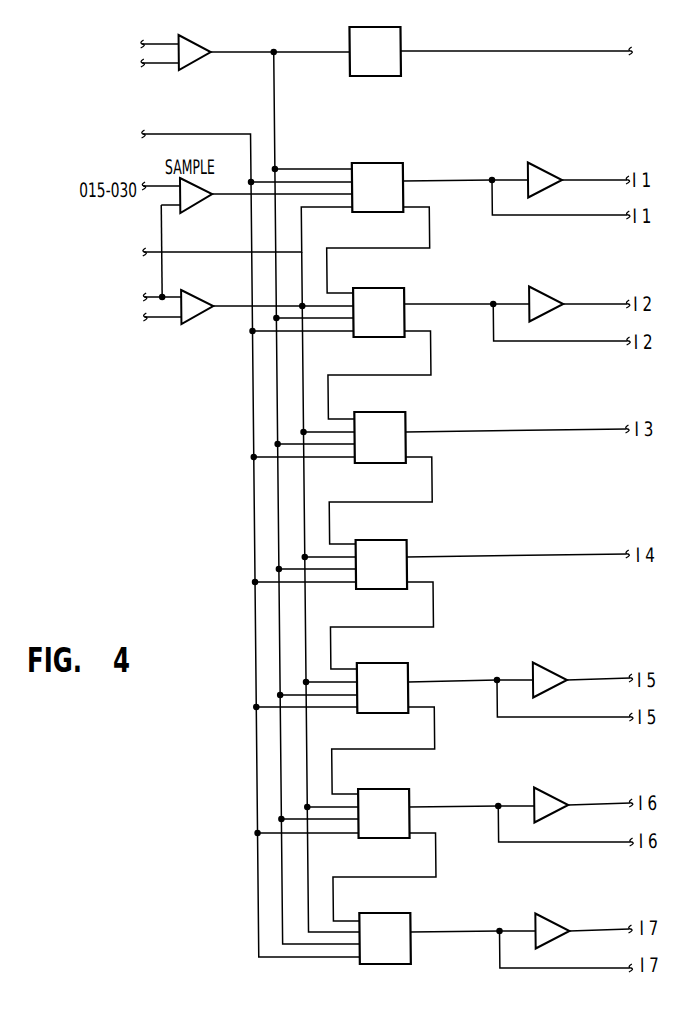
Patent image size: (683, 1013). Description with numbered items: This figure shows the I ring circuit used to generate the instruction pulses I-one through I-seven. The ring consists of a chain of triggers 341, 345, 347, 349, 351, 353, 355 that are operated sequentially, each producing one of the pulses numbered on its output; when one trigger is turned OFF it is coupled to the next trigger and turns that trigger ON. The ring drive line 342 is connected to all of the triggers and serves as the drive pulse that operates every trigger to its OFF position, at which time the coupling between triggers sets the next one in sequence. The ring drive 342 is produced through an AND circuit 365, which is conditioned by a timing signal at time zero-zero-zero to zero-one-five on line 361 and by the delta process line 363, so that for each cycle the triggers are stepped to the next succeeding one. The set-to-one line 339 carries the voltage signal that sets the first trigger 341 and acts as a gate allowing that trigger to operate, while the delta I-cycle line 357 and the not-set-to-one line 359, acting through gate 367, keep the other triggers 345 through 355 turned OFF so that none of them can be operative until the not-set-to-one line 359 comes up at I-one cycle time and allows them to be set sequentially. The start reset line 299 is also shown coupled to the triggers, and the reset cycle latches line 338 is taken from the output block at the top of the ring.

The 000-015 timing signal line 361 is at (148, 44).
The delta process line 363 is at (158, 63).
The AND circuit 365 is at (199, 59).
The ring drive line 342 is at (275, 77).
The reset cycle latches line 338 is at (443, 47).
The start reset line 299 is at (220, 137).
The set to 1 line 339 is at (181, 257).
The delta I-cycle line 357 is at (156, 300).
The not set to 1 line 359 is at (165, 317).
The gate 367 is at (201, 315).
The trigger 341 is at (376, 164).
The trigger 345 is at (376, 289).
The trigger 347 is at (376, 413).
The trigger 349 is at (376, 541).
The trigger 351 is at (376, 664).
The trigger 353 is at (376, 790).
The trigger 355 is at (376, 914).